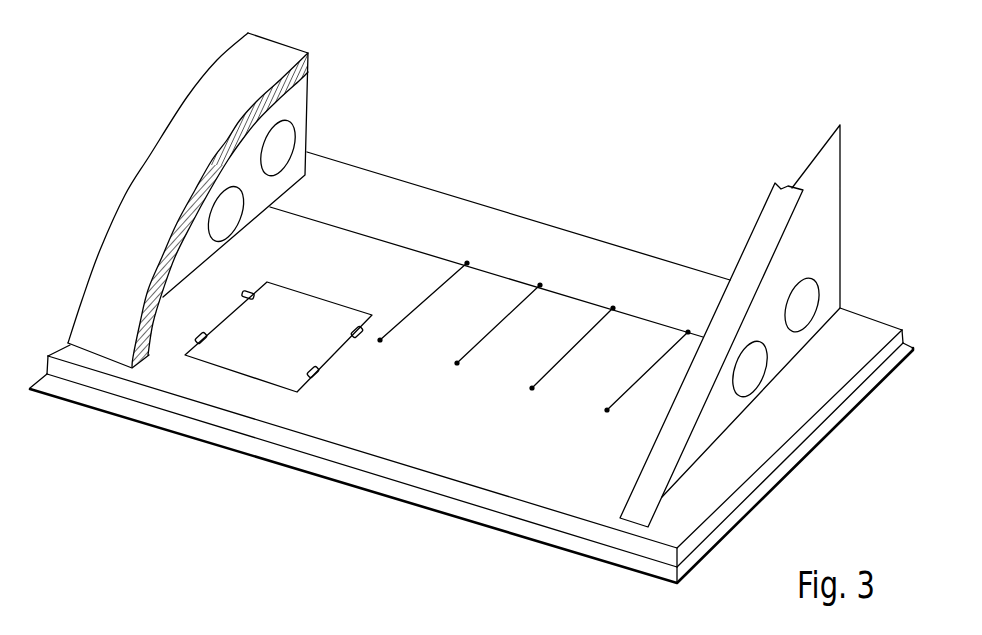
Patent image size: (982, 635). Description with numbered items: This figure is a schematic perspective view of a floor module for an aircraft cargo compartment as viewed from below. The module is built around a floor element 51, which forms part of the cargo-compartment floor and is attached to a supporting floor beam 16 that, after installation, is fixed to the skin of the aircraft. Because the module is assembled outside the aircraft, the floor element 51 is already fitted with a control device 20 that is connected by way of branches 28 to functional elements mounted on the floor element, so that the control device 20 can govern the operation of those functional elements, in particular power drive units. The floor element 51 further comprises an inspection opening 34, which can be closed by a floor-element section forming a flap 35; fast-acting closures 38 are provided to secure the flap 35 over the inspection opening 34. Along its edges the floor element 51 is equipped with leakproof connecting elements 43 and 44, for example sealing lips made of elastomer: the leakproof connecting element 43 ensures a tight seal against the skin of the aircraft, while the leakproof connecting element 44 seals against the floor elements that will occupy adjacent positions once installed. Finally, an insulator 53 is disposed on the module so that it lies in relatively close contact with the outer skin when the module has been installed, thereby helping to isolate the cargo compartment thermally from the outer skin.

The floor beam 16 is at (833, 233).
The control device 20 is at (797, 365).
The branch 28 is at (547, 285).
The inspection opening 34 is at (304, 330).
The flap 35 is at (305, 301).
The fast-acting closure 38 is at (318, 374).
The leakproof connecting element 43 is at (657, 577).
The leakproof connecting element 44 is at (793, 465).
The floor element 51 is at (428, 184).
The insulator 53 is at (137, 211).